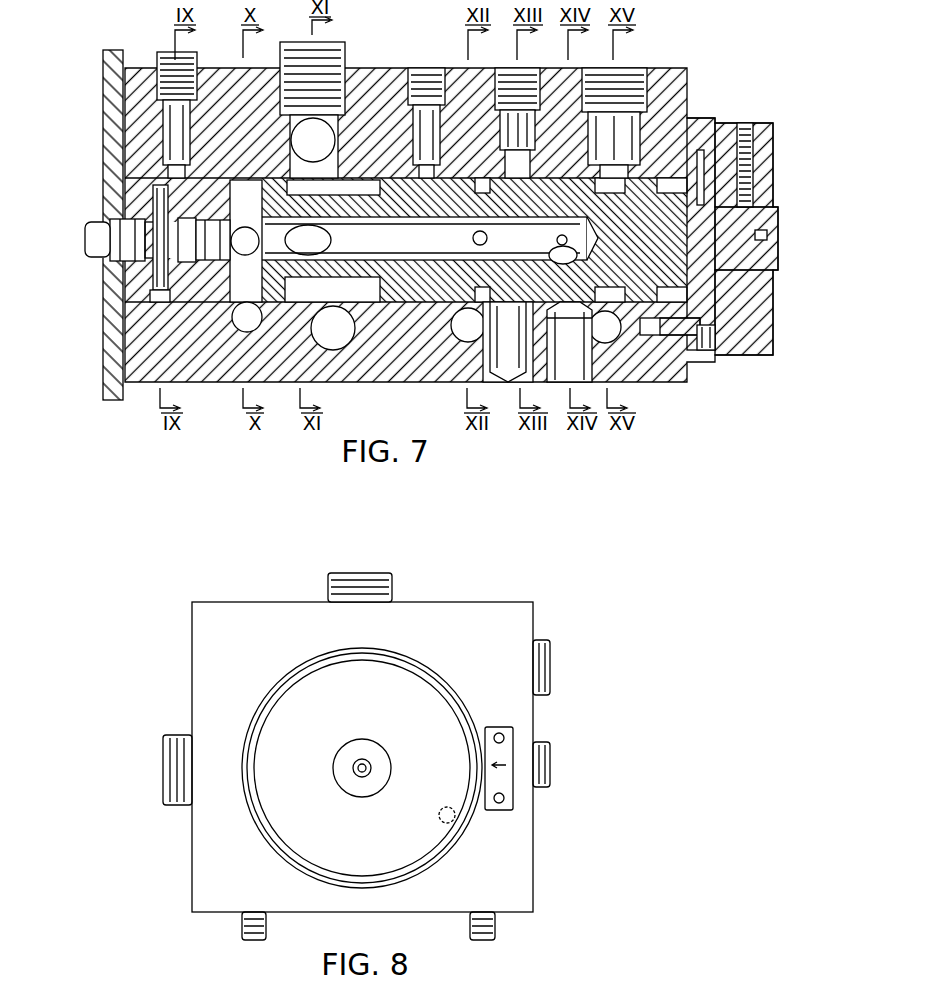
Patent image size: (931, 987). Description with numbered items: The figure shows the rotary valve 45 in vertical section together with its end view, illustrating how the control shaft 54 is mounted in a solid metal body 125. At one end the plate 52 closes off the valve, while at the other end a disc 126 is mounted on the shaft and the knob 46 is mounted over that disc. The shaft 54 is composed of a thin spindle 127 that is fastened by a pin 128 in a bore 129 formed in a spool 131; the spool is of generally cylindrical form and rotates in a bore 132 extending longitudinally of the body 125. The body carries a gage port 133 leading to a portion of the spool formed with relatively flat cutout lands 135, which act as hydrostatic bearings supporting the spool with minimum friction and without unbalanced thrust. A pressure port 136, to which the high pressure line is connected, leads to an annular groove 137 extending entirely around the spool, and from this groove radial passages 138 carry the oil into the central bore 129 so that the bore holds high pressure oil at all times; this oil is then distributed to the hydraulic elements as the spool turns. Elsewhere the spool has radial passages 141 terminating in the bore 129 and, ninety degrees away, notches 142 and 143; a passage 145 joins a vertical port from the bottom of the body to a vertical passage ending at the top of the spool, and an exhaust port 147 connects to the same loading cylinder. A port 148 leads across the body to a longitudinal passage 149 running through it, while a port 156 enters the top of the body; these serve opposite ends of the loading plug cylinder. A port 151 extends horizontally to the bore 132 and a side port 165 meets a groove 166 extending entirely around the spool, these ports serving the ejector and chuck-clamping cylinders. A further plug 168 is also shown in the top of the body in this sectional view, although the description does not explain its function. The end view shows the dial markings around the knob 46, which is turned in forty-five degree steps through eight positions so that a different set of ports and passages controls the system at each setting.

In FIG. 7, the valve 45 is at (358, 68).
In FIG. 8, the valve 45 is at (543, 606).
In FIG. 7, the knob 46 is at (765, 148).
In FIG. 8, the knob 46 is at (425, 855).
In FIG. 7, the plate 52 is at (112, 88).
In FIG. 7, the shaft 54 is at (108, 258).
In FIG. 8, the shaft 54 is at (391, 763).
In FIG. 7, the body 125 is at (150, 375).
In FIG. 8, the body 125 is at (246, 610).
In FIG. 7, the disc 126 is at (698, 128).
In FIG. 8, the disc 126 is at (415, 660).
In FIG. 7, the spindle 127 is at (95, 243).
In FIG. 7, the pin 128 is at (155, 203).
In FIG. 7, the bore 129 is at (125, 266).
In FIG. 7, the spool 131 is at (703, 245).
In FIG. 7, the bore 132 is at (242, 186).
In FIG. 7, the gage port 133 is at (170, 90).
In FIG. 7, the lands 135 is at (160, 300).
In FIG. 7, the port 136 is at (250, 328).
In FIG. 7, the annular groove 137 is at (228, 322).
In FIG. 7, the radial passages 138 is at (262, 241).
In FIG. 7, the radial passages 141 is at (332, 245).
In FIG. 7, the notch 142 is at (345, 195).
In FIG. 7, the notch 143 is at (362, 300).
In FIG. 7, the passage 145 is at (312, 110).
In FIG. 7, the exhaust port 147 is at (345, 350).
In FIG. 7, the port 148 is at (455, 335).
In FIG. 8, the longitudinal passage 149 is at (470, 826).
In FIG. 7, the port 151 is at (548, 254).
In FIG. 7, the port 156 is at (508, 85).
In FIG. 7, the port 165 is at (625, 80).
In FIG. 7, the groove 166 is at (612, 288).
In FIG. 7, the plug 168 is at (420, 85).